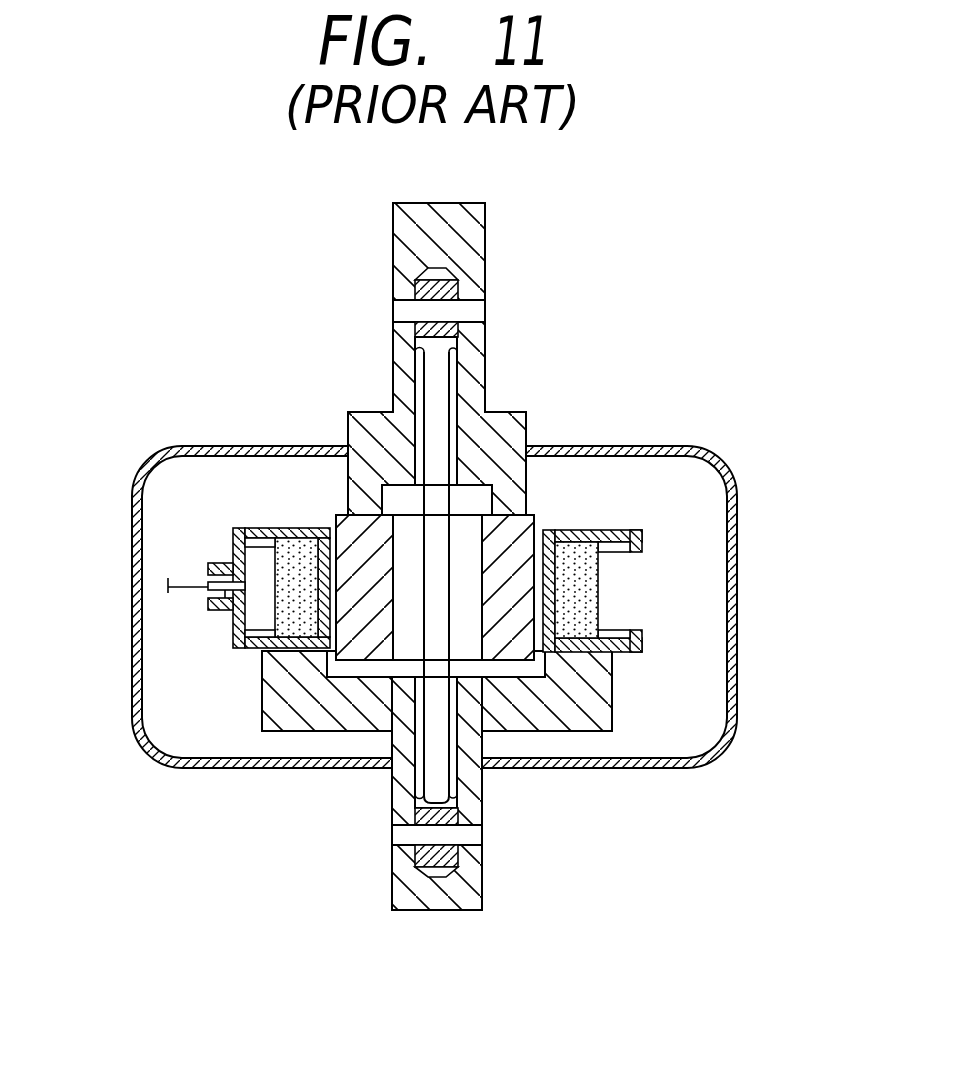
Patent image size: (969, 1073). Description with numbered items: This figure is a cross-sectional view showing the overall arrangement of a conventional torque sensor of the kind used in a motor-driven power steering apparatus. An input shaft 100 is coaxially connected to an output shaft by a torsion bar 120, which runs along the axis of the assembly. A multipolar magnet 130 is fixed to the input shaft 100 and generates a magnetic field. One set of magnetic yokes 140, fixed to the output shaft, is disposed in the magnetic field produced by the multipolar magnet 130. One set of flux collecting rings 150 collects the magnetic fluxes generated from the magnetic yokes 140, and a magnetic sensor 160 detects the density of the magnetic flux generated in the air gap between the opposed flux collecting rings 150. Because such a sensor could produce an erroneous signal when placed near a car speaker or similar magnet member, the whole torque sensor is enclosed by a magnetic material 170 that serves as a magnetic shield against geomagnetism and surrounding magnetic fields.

The input shaft 100 is at (473, 232).
The torsion bar 120 is at (447, 382).
The multipolar magnet 130 is at (530, 517).
The magnetic yokes 140 is at (580, 531).
The flux collecting rings 150 is at (233, 547).
The magnetic sensor 160 is at (223, 610).
The magnetic material 170 is at (733, 632).